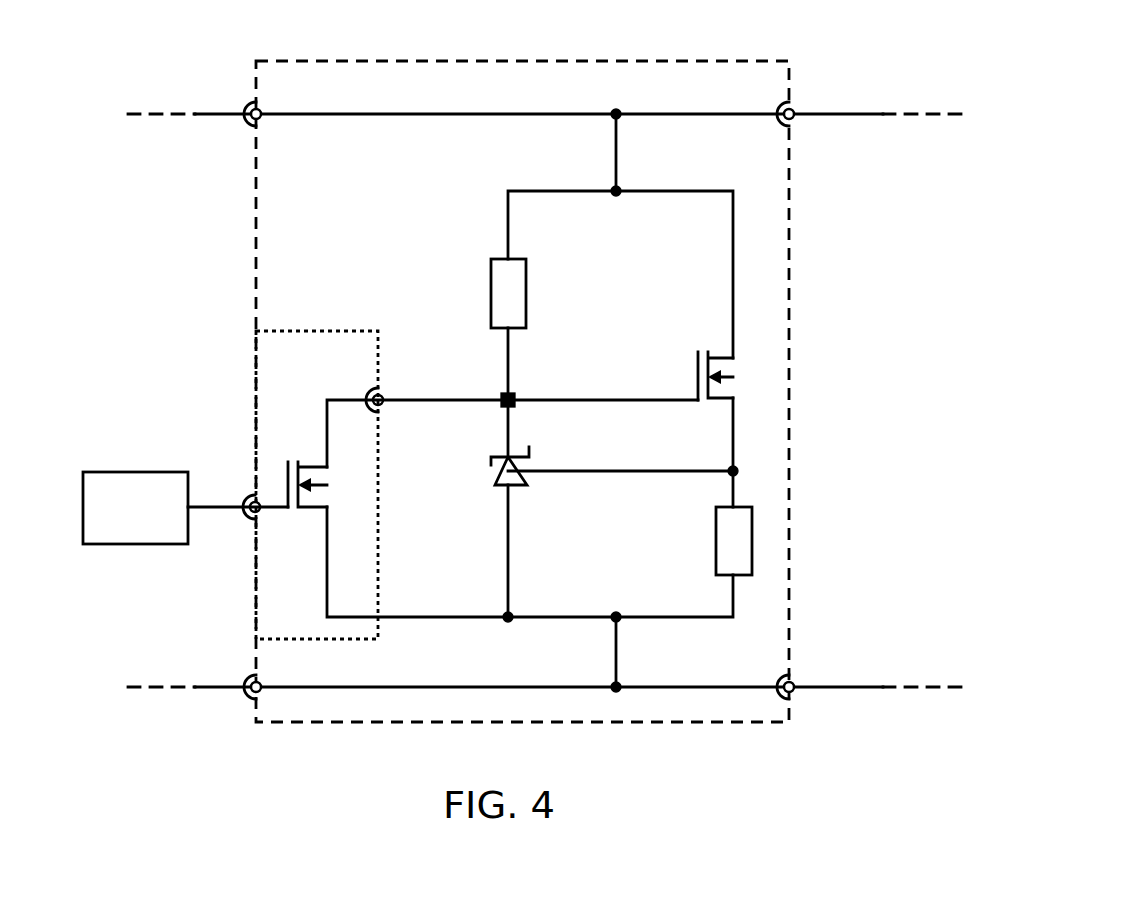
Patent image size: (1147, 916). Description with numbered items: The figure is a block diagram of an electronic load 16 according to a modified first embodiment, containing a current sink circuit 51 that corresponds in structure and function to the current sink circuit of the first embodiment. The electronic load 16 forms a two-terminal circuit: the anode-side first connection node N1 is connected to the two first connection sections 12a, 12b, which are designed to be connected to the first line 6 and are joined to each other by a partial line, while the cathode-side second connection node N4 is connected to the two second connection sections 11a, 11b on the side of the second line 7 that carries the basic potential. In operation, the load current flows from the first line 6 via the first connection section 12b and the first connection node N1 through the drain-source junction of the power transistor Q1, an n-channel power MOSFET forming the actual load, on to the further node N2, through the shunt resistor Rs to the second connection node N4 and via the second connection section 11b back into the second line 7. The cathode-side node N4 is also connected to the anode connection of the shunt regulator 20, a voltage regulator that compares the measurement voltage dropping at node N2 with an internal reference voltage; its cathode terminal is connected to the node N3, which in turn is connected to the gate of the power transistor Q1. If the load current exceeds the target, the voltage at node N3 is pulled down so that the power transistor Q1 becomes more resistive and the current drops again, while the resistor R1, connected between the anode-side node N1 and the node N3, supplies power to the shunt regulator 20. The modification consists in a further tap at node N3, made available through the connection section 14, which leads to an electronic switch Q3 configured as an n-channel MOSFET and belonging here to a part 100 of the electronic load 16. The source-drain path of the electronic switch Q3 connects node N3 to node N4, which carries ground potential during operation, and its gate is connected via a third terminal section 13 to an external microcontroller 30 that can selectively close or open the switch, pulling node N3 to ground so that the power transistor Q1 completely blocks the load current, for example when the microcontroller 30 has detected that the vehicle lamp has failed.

The first line 6 is at (218, 114).
The second line 7 is at (210, 690).
The first connection section 12a is at (775, 104).
The first connection section 12b is at (265, 106).
The second connection section 11a is at (787, 700).
The second connection section 11b is at (262, 692).
The electronic load 16 is at (791, 278).
The current sink circuit 51 is at (783, 203).
The first connection node N1 is at (620, 120).
The node N2 is at (737, 468).
The node N3 is at (514, 397).
The second connection node N4 is at (620, 682).
The resistor R1 is at (528, 277).
The shunt resistor Rs is at (752, 536).
The power transistor Q1 is at (697, 368).
The electronic switch Q3 is at (285, 475).
The shunt regulator 20 is at (500, 483).
The part of the electronic load 100 is at (306, 330).
The connection section 14 is at (378, 388).
The third terminal section 13 is at (257, 517).
The microcontroller 30 is at (146, 472).